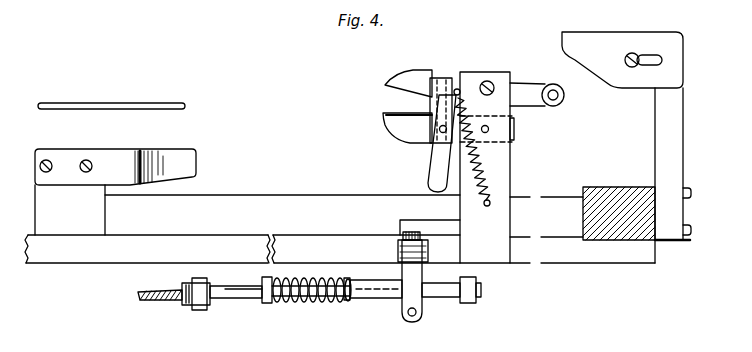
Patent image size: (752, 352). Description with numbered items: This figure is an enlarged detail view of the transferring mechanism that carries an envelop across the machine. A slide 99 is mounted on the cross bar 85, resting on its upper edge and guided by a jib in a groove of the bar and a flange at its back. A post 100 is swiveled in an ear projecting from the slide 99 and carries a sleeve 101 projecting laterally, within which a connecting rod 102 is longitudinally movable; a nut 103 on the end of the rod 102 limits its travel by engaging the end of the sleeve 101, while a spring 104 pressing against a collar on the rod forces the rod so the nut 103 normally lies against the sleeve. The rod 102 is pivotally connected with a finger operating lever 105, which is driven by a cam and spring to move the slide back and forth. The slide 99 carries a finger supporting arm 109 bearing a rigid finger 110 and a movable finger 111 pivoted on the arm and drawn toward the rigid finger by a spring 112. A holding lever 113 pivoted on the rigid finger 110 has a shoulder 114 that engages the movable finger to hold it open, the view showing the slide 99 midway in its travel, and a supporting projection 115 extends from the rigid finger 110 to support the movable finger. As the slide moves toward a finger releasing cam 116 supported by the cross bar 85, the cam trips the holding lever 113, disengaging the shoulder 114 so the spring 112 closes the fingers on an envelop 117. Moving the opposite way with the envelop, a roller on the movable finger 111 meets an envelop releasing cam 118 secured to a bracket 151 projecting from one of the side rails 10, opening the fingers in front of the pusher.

The side rail 10 is at (613, 186).
The cross bar 85 is at (568, 258).
The slide 99 is at (500, 228).
The post 100 is at (418, 298).
The sleeve 101 is at (386, 290).
The connecting rod 102 is at (247, 297).
The nut 103 is at (472, 300).
The spring 104 is at (316, 300).
The finger operating lever 105 is at (182, 297).
The finger supporting arm 109 is at (482, 162).
The rigid finger 110 is at (406, 128).
The movable finger 111 is at (417, 80).
The spring 112 is at (511, 147).
The holding lever 113 is at (433, 158).
The shoulder 114 is at (459, 91).
The supporting projection 115 is at (441, 80).
The finger releasing cam 116 is at (192, 151).
The envelop 117 is at (171, 102).
The envelop releasing cam 118 is at (613, 37).
The bracket 151 is at (674, 138).